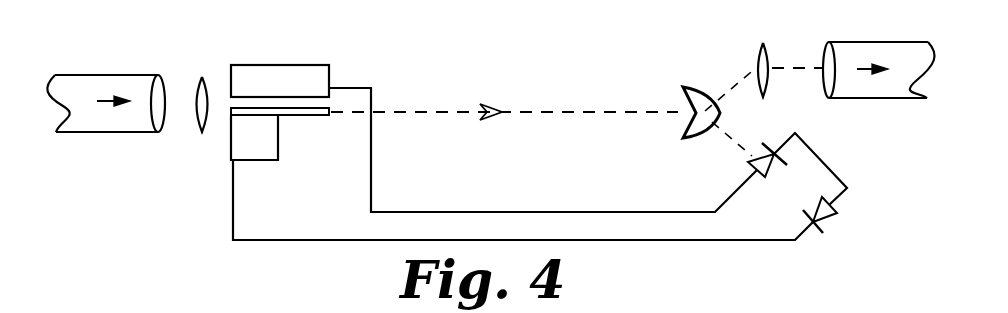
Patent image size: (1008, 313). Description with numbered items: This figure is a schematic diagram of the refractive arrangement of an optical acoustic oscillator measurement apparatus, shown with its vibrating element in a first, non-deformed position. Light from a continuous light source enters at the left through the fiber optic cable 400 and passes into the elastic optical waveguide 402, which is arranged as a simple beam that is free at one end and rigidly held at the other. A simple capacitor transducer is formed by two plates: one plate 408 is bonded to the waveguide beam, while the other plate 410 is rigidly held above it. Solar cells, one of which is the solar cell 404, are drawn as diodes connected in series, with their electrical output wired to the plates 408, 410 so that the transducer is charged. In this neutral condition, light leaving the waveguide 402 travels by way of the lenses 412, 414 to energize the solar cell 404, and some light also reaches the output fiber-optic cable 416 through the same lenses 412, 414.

The fiber optic cable 400 is at (107, 133).
The elastic optical waveguide 402 is at (302, 116).
The solar cell 404 is at (833, 214).
The plate 408 is at (242, 161).
The plate 410 is at (298, 63).
The lens 412 is at (750, 160).
The lens 414 is at (768, 97).
The output fiber-optic cable 416 is at (852, 99).